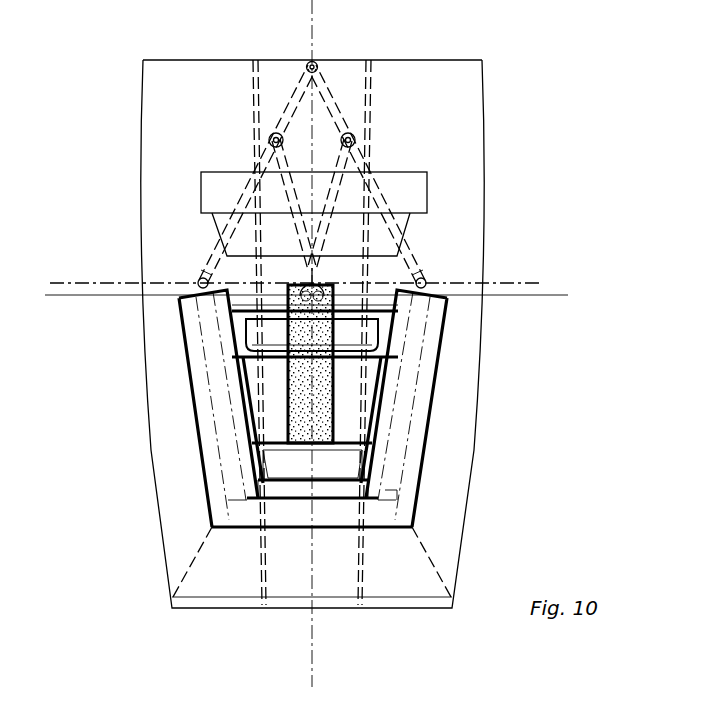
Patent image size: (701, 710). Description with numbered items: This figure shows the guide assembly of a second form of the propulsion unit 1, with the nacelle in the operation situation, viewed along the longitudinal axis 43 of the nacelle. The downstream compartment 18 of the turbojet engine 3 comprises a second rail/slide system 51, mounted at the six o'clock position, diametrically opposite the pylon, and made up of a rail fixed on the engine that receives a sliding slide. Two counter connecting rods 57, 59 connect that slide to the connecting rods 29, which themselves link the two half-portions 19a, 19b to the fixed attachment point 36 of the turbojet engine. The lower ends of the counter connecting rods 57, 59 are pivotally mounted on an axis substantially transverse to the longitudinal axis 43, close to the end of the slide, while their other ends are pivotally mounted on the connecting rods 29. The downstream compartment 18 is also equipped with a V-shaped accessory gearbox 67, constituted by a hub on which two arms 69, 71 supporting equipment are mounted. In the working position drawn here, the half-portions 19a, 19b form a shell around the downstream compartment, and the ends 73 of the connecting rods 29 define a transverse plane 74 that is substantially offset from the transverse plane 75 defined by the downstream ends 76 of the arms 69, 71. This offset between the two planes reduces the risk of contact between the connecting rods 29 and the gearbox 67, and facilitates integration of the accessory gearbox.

The propulsion unit 1 is at (86, 50).
The half-portion 19a is at (462, 117).
The half-portion 19b is at (160, 117).
The fixed attachment point 36 is at (311, 62).
The connecting rods 29 is at (285, 100).
The counter connecting rod 59 is at (280, 195).
The counter connecting rod 57 is at (335, 228).
The ends of the connecting rods 73 is at (215, 250).
The transverse plane 74 is at (530, 283).
The transverse plane 75 is at (549, 297).
The downstream ends of the arms 76 is at (198, 304).
The downstream compartment 18 is at (460, 336).
The arm 71 is at (437, 372).
The arm 69 is at (185, 398).
The second rail/slide system 51 is at (335, 386).
The turbojet engine 3 is at (400, 478).
The V-shaped accessory gearbox 67 is at (420, 505).
The longitudinal axis 43 is at (313, 668).